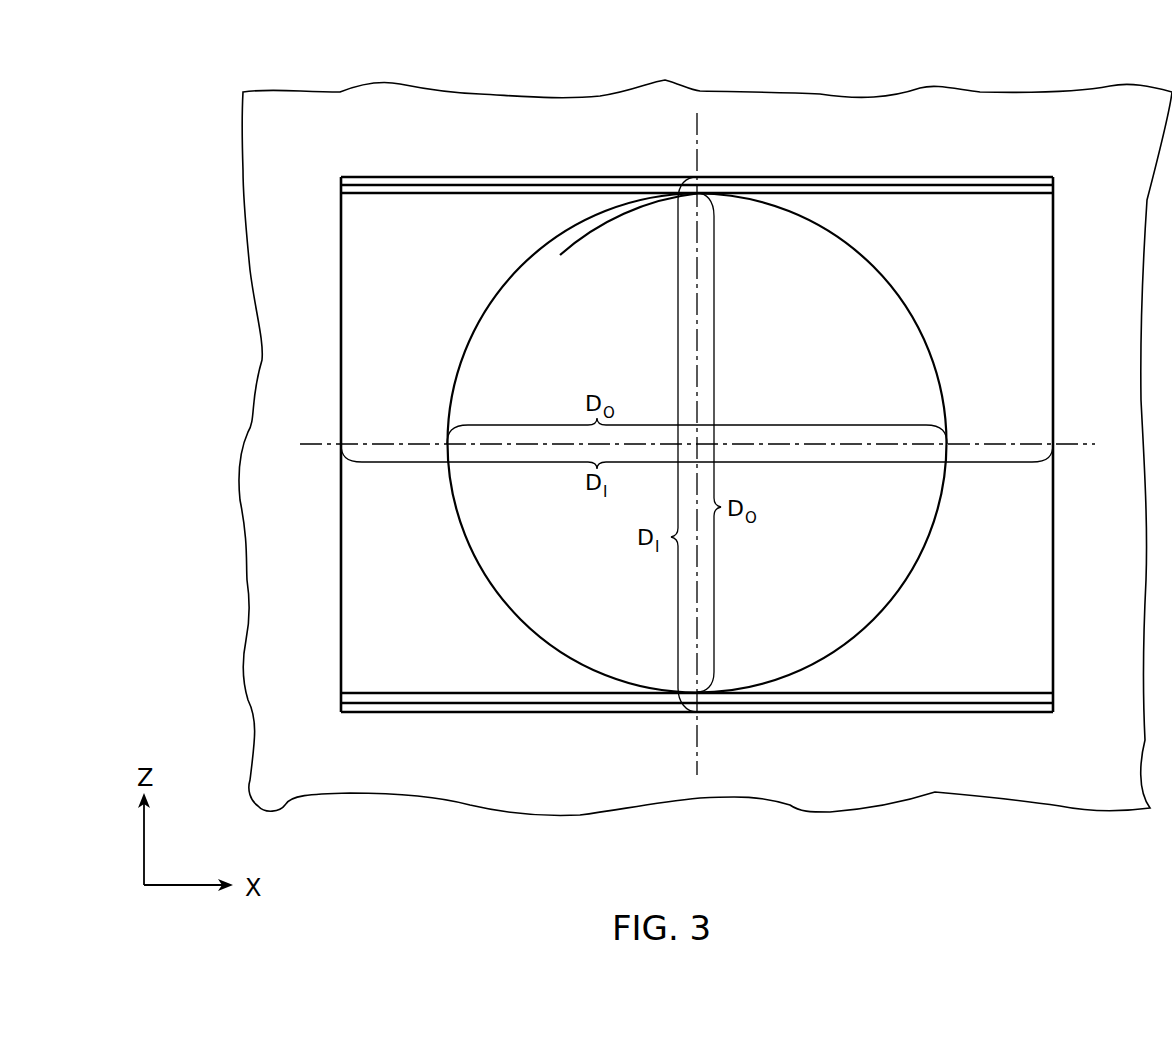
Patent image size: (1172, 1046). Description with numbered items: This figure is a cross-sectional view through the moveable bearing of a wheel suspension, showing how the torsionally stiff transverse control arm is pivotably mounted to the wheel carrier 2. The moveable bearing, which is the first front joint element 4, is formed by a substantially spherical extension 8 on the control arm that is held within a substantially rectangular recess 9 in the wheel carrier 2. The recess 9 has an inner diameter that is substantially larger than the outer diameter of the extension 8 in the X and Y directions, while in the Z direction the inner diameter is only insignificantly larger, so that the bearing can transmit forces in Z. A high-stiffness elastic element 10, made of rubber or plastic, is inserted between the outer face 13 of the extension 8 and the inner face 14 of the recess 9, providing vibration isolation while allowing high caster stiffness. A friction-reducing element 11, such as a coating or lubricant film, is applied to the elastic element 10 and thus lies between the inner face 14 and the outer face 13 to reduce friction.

The wheel carrier 2 is at (258, 605).
The first front joint element 4 is at (320, 310).
The extension 8 is at (883, 593).
The recess 9 is at (358, 232).
The elastic element 10 is at (1055, 182).
The friction-reducing element 11 is at (1055, 190).
The outer face 13 is at (553, 238).
The inner face 14 is at (626, 176).